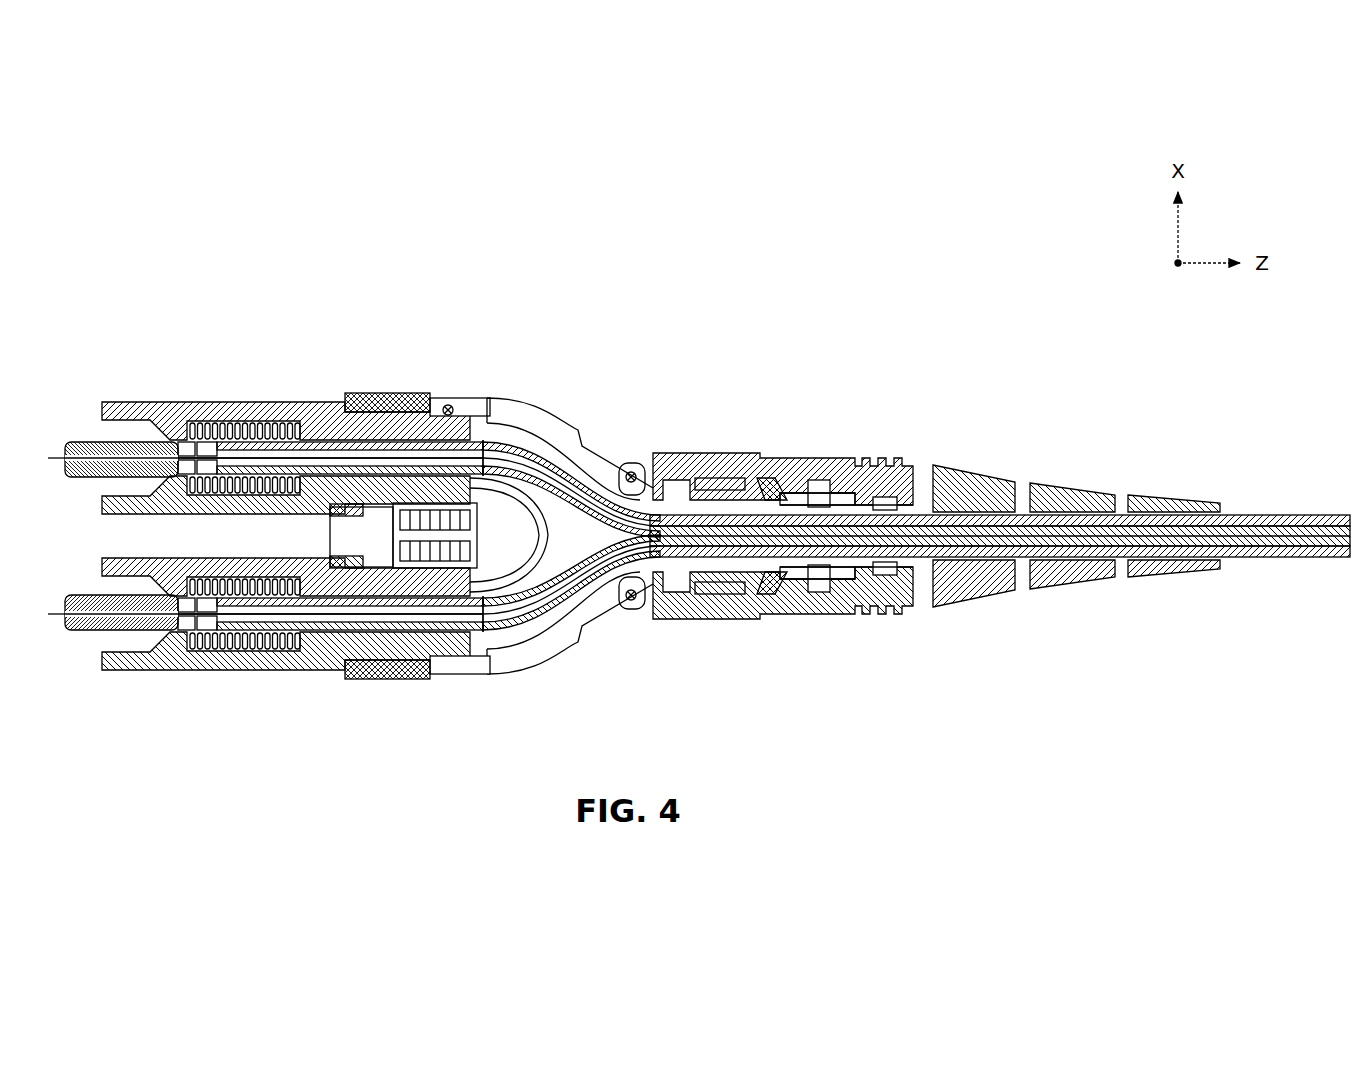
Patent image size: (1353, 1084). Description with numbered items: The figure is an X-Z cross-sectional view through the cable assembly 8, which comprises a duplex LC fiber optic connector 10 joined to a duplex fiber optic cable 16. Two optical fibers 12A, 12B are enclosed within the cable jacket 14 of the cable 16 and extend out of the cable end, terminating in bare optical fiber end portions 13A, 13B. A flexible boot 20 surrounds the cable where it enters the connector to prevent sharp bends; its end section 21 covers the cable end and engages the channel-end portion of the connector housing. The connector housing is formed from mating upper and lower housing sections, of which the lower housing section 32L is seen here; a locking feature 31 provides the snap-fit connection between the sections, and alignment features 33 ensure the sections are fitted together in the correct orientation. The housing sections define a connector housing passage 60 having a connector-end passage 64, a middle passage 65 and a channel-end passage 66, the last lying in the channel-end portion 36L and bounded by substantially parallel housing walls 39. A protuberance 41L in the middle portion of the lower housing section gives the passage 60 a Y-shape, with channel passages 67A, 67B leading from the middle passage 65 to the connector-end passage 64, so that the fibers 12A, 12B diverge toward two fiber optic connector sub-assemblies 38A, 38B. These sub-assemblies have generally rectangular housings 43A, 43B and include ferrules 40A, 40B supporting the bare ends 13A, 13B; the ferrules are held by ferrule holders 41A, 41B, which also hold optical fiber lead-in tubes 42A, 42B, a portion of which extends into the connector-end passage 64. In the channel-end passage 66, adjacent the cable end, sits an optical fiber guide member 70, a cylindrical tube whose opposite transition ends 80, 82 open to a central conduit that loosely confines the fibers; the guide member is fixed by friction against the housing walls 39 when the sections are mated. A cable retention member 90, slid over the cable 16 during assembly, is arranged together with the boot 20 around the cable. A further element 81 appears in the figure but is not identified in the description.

The cable assembly 8 is at (792, 248).
The connector 10 is at (530, 246).
The optical fiber 12A is at (566, 442).
The optical fiber 12B is at (528, 602).
The bare optical fiber end portion 13A is at (64, 455).
The bare optical fiber end portion 13B is at (58, 612).
The cable jacket 14 is at (1237, 515).
The cable 16 is at (1292, 513).
The flexible boot 20 is at (975, 468).
The end section 21 is at (720, 592).
The locking feature 31 is at (450, 404).
The lower housing section 32L is at (450, 674).
The alignment features 33 is at (656, 445).
The channel-end portion 36L is at (745, 597).
The connector sub-assembly 38A is at (232, 385).
The connector sub-assembly 38B is at (240, 682).
The housing walls 39 is at (745, 455).
The ferrule 40A is at (88, 440).
The ferrule 40B is at (86, 634).
The ferrule holder 41A is at (173, 412).
The ferrule holder 41B is at (173, 662).
The protuberance 41L is at (605, 442).
The optical fiber lead-in tube 42A is at (320, 410).
The optical fiber lead-in tube 42B is at (318, 665).
The housing 43A is at (255, 400).
The housing 43B is at (265, 665).
The connector housing passage 60 is at (590, 541).
The connector-end passage 64 is at (498, 602).
The middle passage 65 is at (604, 462).
The channel-end passage 66 is at (668, 592).
The channel passage 67A is at (519, 432).
The channel passage 67B is at (550, 618).
The optical fiber guide member 70 is at (700, 588).
The transition end 80 is at (695, 453).
The housing fastener 81 is at (633, 472).
The transition end 82 is at (772, 478).
The cable retention member 90 is at (810, 480).